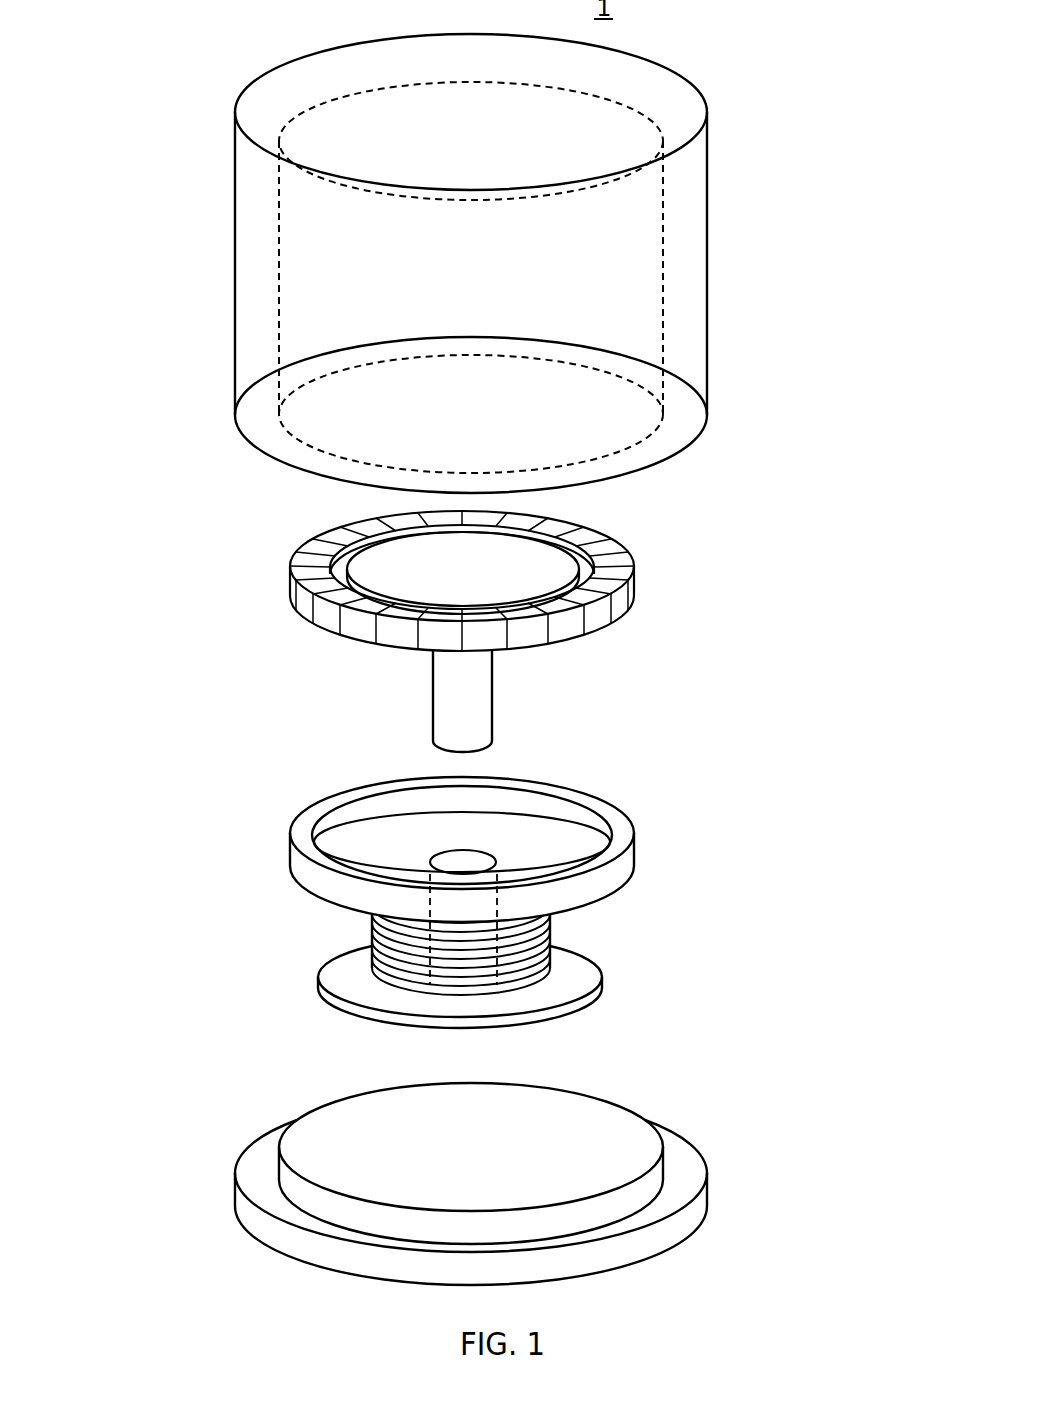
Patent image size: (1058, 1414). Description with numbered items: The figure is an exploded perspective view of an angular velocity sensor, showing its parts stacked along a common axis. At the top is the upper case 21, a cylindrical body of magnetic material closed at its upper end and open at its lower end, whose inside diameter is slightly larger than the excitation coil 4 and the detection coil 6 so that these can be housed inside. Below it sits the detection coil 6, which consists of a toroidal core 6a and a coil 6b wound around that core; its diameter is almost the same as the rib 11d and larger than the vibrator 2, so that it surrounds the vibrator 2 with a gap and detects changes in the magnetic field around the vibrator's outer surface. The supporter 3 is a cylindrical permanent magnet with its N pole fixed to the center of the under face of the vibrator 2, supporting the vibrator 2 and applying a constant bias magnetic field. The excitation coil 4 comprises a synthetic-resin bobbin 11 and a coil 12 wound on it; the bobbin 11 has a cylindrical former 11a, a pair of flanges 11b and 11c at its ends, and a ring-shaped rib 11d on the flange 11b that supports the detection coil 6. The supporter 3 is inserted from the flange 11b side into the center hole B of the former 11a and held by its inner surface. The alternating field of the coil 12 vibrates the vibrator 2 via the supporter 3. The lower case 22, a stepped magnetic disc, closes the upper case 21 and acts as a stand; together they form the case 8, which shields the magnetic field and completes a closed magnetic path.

The upper case 21 is at (700, 278).
The vibrator 2 is at (537, 556).
The detection coil 6 is at (515, 581).
The toroidal core 6a is at (617, 541).
The coil 6b is at (700, 523).
The supporter 3 is at (480, 703).
The center hole B is at (462, 870).
The bobbin 11 is at (401, 890).
The rib 11d is at (312, 815).
The flange 11b is at (353, 852).
The cylindrical former 11a is at (382, 970).
The flange 11c is at (411, 987).
The coil 12 is at (547, 958).
The excitation coil 4 is at (652, 905).
The lower case 22 is at (688, 1158).
The case 8 is at (795, 275).